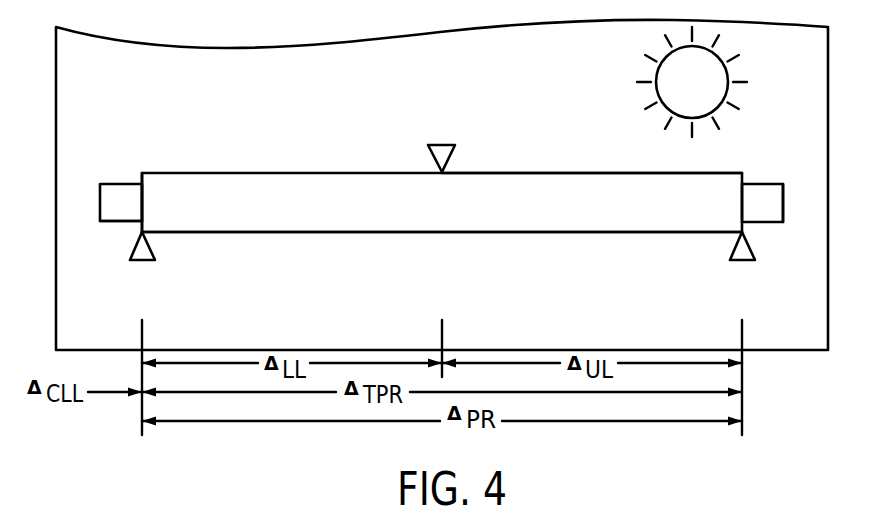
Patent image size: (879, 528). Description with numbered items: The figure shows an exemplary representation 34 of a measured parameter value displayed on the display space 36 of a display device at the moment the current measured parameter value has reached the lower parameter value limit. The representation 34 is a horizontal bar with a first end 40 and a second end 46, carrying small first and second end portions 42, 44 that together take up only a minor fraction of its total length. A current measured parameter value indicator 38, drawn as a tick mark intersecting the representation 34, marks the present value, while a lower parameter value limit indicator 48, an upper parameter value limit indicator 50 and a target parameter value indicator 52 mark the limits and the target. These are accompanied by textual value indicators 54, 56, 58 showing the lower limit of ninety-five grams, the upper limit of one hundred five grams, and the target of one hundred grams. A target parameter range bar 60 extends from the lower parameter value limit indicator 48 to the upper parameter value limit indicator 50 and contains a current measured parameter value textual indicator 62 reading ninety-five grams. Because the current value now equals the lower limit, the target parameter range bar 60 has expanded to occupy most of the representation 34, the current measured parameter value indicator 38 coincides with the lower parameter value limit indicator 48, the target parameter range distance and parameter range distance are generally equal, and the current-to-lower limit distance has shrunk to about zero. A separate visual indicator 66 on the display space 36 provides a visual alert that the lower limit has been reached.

The representation 34 is at (186, 106).
The display space 36 is at (810, 77).
The current measured parameter value indicator 38 is at (142, 173).
The first end 40 is at (100, 203).
The first end portion 42 is at (120, 218).
The second end portion 44 is at (753, 193).
The second end 46 is at (783, 203).
The lower parameter value limit indicator 48 is at (150, 243).
The upper parameter value limit indicator 50 is at (748, 248).
The target parameter value indicator 52 is at (434, 160).
The lower parameter value limit textual value indicator 54 is at (143, 295).
The upper parameter value limit textual value indicator 56 is at (705, 280).
The target parameter value textual value indicator 58 is at (435, 107).
The target parameter range bar 60 is at (322, 173).
The current measured parameter value textual indicator 62 is at (472, 185).
The visual indicator 66 is at (665, 78).